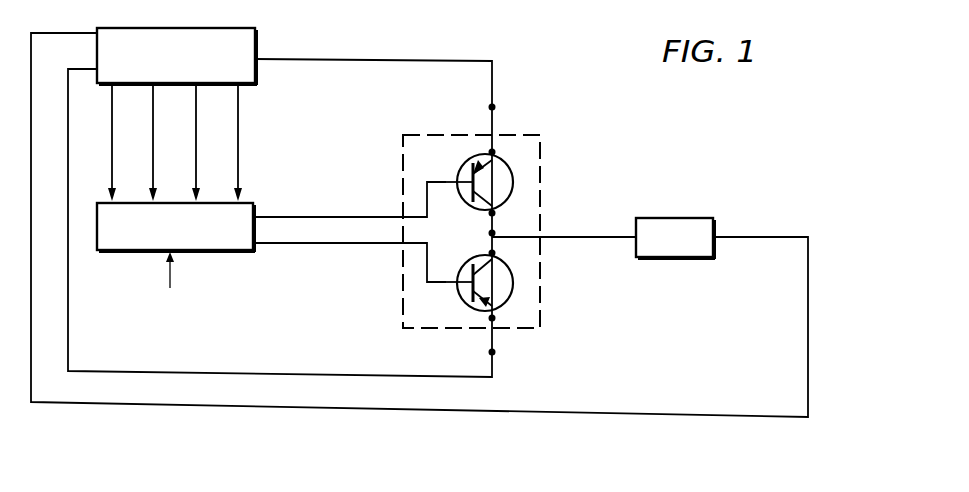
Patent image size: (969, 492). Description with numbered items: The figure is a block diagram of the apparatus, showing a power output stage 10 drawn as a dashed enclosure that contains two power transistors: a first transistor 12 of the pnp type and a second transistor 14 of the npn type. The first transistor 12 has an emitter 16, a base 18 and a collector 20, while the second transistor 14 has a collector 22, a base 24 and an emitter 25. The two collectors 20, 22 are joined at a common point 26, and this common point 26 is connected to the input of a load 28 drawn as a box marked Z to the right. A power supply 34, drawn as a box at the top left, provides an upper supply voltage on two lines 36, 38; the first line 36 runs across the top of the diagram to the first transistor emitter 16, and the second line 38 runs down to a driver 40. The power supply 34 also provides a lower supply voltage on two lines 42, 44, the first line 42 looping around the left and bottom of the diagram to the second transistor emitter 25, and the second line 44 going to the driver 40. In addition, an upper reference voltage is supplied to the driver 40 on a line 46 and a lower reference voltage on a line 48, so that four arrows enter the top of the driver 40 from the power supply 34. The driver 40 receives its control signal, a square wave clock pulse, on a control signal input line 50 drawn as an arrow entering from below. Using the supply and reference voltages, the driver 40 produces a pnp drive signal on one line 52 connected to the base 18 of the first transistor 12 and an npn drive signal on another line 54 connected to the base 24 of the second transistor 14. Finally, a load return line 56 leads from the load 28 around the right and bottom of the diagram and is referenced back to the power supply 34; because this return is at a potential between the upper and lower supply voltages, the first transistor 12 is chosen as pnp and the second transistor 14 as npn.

The power output stage 10 is at (545, 144).
The first transistor 12 is at (514, 182).
The second transistor 14 is at (514, 284).
The emitter 16 is at (495, 150).
The base 18 is at (466, 182).
The collector 20 is at (496, 213).
The collector 22 is at (496, 253).
The base 24 is at (462, 287).
The emitter 25 is at (494, 320).
The common point 26 is at (490, 234).
The load 28 is at (673, 218).
The power supply 34 is at (234, 28).
The first line 36 is at (369, 60).
The second line 38 is at (236, 121).
The driver 40 is at (128, 252).
The first line 42 is at (67, 100).
The second line 44 is at (110, 134).
The line 46 is at (194, 138).
The line 48 is at (151, 123).
The control signal input line 50 is at (172, 276).
The line 52 is at (284, 216).
The line 54 is at (292, 244).
The load return line 56 is at (807, 318).